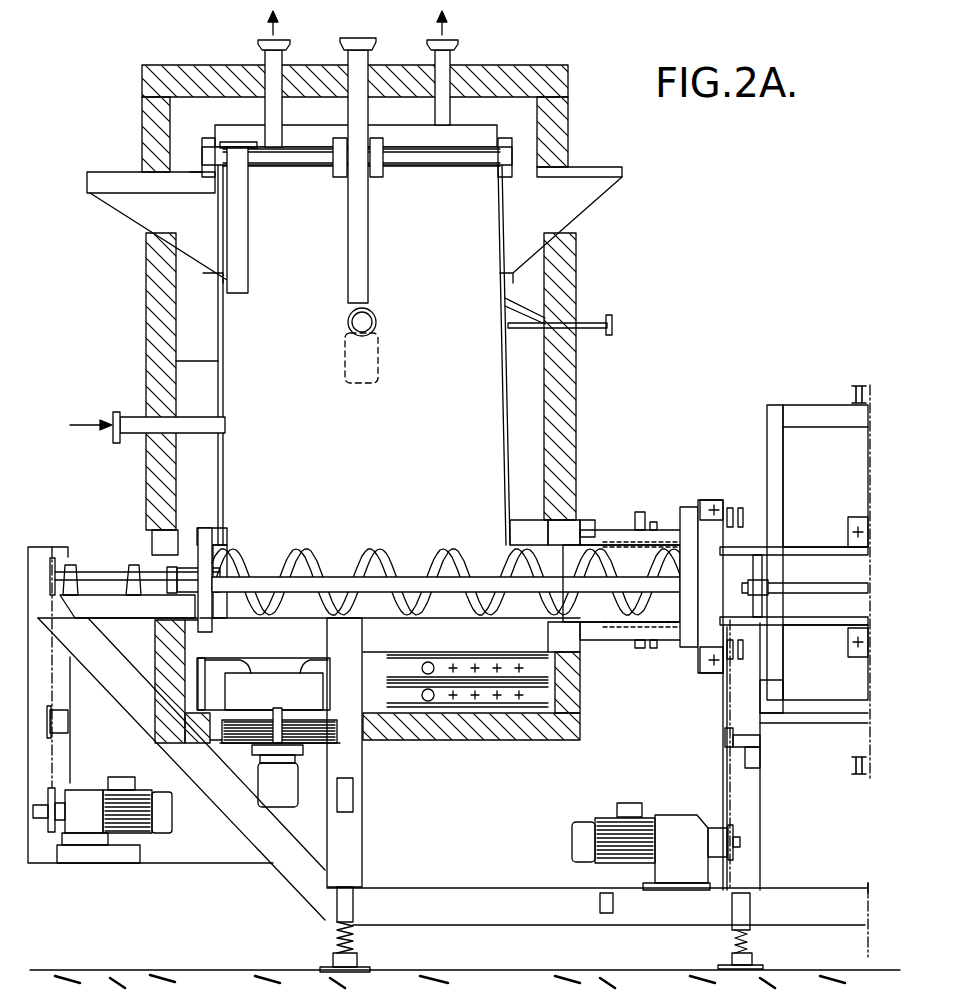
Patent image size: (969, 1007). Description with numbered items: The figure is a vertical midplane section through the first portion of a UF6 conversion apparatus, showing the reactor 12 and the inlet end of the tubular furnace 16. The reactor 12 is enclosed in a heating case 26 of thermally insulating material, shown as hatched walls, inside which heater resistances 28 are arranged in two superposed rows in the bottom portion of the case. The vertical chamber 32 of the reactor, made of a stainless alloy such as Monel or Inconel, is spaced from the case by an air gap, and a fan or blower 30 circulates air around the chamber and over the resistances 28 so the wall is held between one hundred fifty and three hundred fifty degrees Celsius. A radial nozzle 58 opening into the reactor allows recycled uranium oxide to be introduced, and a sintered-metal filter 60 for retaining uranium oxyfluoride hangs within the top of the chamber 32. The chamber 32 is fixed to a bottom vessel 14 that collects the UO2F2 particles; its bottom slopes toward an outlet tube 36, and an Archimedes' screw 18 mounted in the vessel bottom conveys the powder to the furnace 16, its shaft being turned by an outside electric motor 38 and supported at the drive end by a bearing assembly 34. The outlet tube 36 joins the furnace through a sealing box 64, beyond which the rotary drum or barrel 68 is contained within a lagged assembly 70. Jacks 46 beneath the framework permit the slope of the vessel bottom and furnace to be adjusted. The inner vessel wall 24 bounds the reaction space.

The reactor 12 is at (506, 296).
The vessel 14 is at (556, 652).
The tubular furnace 16 is at (821, 640).
The Archimedes' screw 18 is at (304, 556).
The inner reaction vessel 24 is at (218, 253).
The heating case 26 is at (158, 122).
The heater resistances 28 is at (482, 688).
The fan or blower 30 is at (315, 698).
The vertical chamber 32 is at (176, 361).
The shaft bearing assembly 34 is at (190, 580).
The outlet tube 36 is at (598, 607).
The electric motor 38 is at (82, 810).
The jacks 46 is at (337, 942).
The radial nozzle 58 is at (205, 430).
The filters 60 is at (228, 235).
The sealing box 64 is at (666, 518).
The rotary drum or barrel 68 is at (840, 553).
The lagged assembly 70 is at (802, 640).